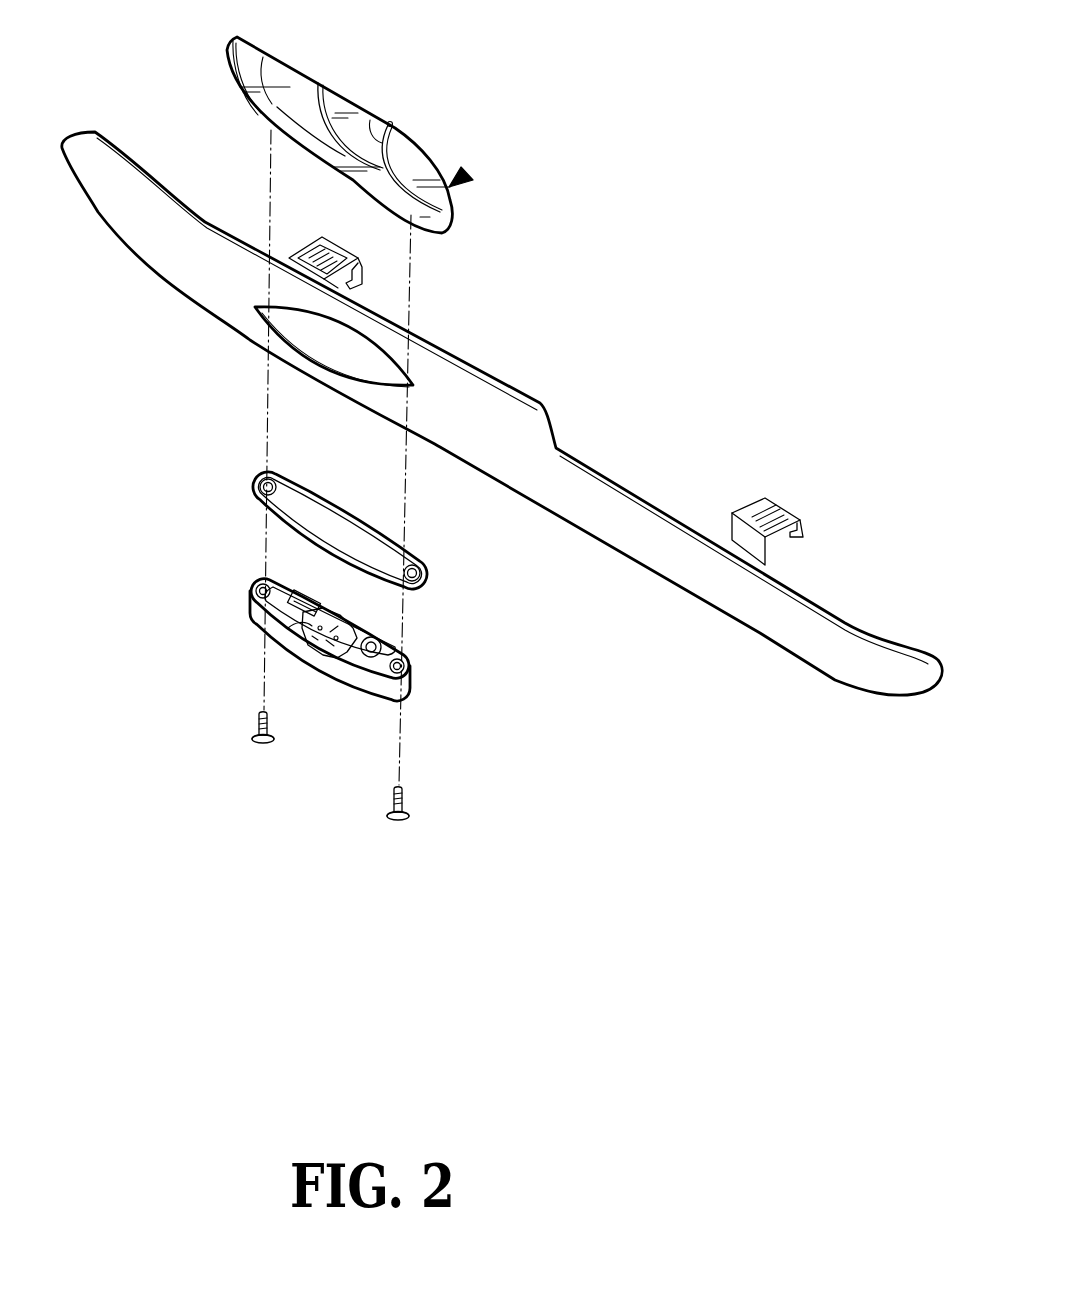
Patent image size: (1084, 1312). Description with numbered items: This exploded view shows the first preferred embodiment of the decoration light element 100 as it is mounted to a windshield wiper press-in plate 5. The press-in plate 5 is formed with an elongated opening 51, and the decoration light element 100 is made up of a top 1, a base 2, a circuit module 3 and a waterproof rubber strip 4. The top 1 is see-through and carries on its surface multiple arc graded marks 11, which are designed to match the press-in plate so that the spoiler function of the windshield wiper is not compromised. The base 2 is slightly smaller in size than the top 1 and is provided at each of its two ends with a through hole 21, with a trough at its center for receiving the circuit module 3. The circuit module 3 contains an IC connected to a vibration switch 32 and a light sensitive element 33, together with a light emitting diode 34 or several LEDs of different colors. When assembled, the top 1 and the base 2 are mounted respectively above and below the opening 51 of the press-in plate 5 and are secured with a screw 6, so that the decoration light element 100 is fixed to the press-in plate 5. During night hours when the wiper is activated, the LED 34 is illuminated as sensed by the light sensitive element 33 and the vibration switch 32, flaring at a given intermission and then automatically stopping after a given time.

The decoration light element 100 is at (463, 175).
The top 1 is at (453, 203).
The arc graded marks 11 is at (373, 113).
The windshield wiper press-in plate 5 is at (592, 473).
The elongated opening 51 is at (290, 333).
The waterproof rubber strip 4 is at (253, 500).
The base 2 is at (322, 690).
The through hole 21 is at (258, 581).
The circuit module 3 is at (343, 690).
The vibration switch 32 is at (290, 613).
The light sensitive element 33 is at (385, 637).
The light emitting diode (LED) 34 is at (273, 637).
The screw 6 is at (253, 723).